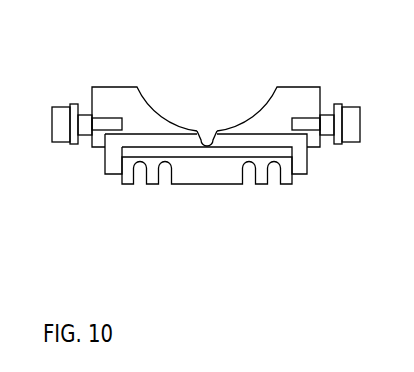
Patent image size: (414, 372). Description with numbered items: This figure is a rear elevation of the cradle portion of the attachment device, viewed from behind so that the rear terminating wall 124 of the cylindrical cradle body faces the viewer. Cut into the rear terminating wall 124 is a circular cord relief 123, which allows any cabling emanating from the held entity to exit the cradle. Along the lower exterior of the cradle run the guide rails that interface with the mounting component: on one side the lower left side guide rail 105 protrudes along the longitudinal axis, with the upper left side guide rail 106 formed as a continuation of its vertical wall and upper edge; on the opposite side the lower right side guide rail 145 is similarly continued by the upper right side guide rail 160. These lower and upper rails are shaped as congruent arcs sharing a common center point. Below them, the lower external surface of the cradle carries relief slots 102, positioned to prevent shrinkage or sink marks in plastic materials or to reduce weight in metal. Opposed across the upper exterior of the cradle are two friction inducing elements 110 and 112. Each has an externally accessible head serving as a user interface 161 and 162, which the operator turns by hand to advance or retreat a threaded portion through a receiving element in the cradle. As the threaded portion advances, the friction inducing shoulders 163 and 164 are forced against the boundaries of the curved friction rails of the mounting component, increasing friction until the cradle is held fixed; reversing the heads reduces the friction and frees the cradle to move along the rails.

The relief slots 102 is at (171, 178).
The lower left side guide rail 105 is at (302, 138).
The upper left side guide rail 106 is at (307, 123).
The friction inducing element 110 is at (52, 107).
The friction inducing element 112 is at (360, 108).
The circular cord relief 123 is at (206, 148).
The rear terminating wall 124 is at (298, 102).
The lower right side guide rail 145 is at (112, 153).
The upper right side guide rail 160 is at (100, 126).
The user interface 161 is at (60, 125).
The user interface 162 is at (350, 128).
The friction inducing shoulder 163 is at (73, 105).
The friction inducing shoulder 164 is at (338, 104).